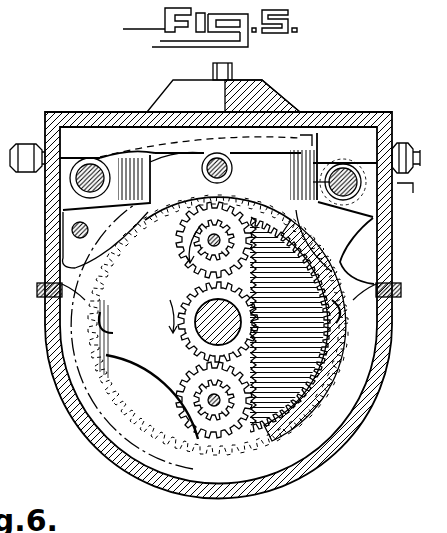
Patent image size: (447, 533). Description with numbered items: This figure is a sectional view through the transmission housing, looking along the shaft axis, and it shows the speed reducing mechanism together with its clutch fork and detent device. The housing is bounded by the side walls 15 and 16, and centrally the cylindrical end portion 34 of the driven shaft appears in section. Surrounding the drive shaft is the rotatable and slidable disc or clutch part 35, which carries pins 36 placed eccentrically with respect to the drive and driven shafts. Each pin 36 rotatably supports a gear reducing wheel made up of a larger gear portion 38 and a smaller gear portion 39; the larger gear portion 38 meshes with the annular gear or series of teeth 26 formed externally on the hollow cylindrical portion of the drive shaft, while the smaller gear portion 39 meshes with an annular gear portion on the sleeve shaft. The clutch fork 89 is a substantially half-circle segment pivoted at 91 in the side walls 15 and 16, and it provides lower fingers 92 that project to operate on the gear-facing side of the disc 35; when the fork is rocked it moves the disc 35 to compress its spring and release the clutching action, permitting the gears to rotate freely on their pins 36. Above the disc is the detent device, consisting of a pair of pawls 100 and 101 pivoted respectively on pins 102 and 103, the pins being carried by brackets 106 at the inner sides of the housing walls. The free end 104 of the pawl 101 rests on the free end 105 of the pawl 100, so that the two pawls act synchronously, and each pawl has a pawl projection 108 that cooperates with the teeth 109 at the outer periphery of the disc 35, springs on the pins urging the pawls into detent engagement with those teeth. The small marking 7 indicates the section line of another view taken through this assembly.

The section line 7 is at (351, 172).
The side wall 15 is at (46, 230).
The side wall 16 is at (40, 256).
The annular gear 26 is at (255, 307).
The cylindrical end portion 34 is at (197, 349).
The disc or clutch part 35 is at (331, 382).
The pins 36 is at (238, 268).
The larger gear portion 38 is at (185, 263).
The smaller gear portion 39 is at (168, 300).
The clutch fork 89 is at (318, 226).
The pivot 91 is at (60, 303).
The lower fingers 92 is at (111, 333).
The pawl 100 is at (320, 153).
The pawl 101 is at (138, 157).
The pin 102 is at (350, 175).
The pin 103 is at (92, 168).
The free end of pawl 104 is at (181, 155).
The free end of pawl 105 is at (177, 168).
The brackets 106 is at (80, 239).
The pawl projection 108 is at (152, 215).
The teeth 109 is at (262, 173).